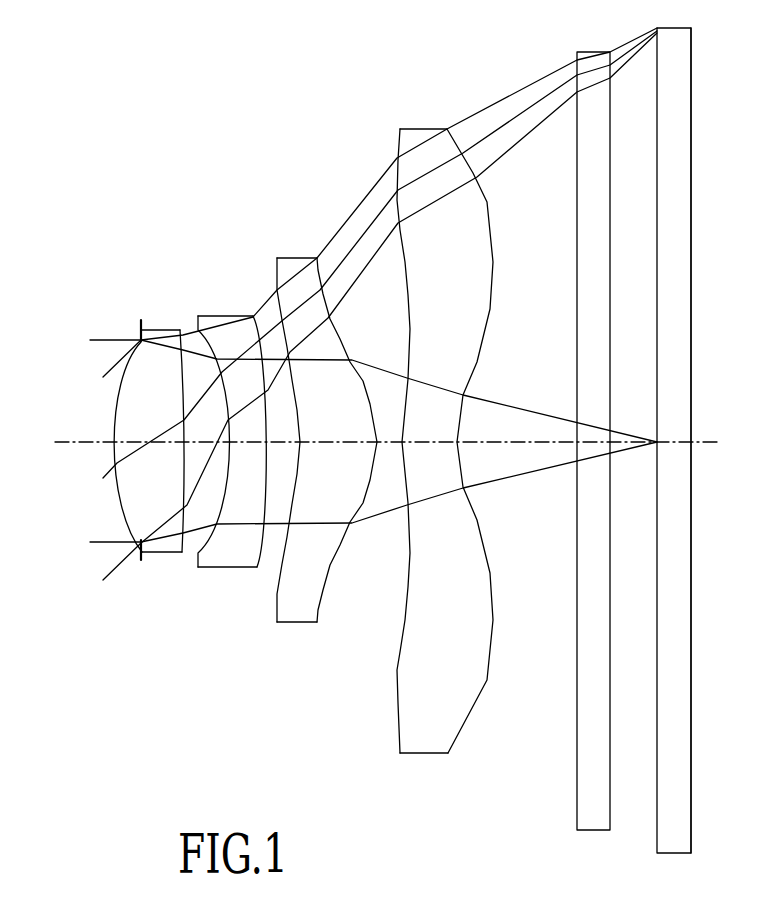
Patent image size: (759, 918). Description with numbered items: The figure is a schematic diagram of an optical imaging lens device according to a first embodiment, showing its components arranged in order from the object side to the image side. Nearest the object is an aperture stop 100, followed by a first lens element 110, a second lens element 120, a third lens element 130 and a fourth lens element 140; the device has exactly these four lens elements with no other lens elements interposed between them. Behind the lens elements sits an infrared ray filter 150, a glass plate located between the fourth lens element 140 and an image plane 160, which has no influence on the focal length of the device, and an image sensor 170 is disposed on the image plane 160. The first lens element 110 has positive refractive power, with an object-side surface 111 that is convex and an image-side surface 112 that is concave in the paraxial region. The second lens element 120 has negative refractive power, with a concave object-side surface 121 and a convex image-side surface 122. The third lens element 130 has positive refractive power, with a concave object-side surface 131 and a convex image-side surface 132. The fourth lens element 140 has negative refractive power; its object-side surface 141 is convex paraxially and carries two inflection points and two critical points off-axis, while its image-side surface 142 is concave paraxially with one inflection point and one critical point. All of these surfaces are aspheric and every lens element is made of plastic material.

The aperture stop 100 is at (137, 322).
The first lens element 110 is at (120, 439).
The object-side surface of the first lens element 111 is at (92, 441).
The image-side surface of the first lens element 112 is at (177, 479).
The second lens element 120 is at (233, 467).
The object-side surface of the second lens element 121 is at (214, 498).
The image-side surface of the second lens element 122 is at (251, 476).
The third lens element 130 is at (323, 440).
The object-side surface of the third lens element 131 is at (289, 470).
The image-side surface of the third lens element 132 is at (347, 440).
The fourth lens element 140 is at (436, 418).
The object-side surface of the fourth lens element 141 is at (379, 455).
The image-side surface of the fourth lens element 142 is at (486, 445).
The IR filter 150 is at (577, 798).
The image plane 160 is at (657, 808).
The image sensor 170 is at (691, 260).